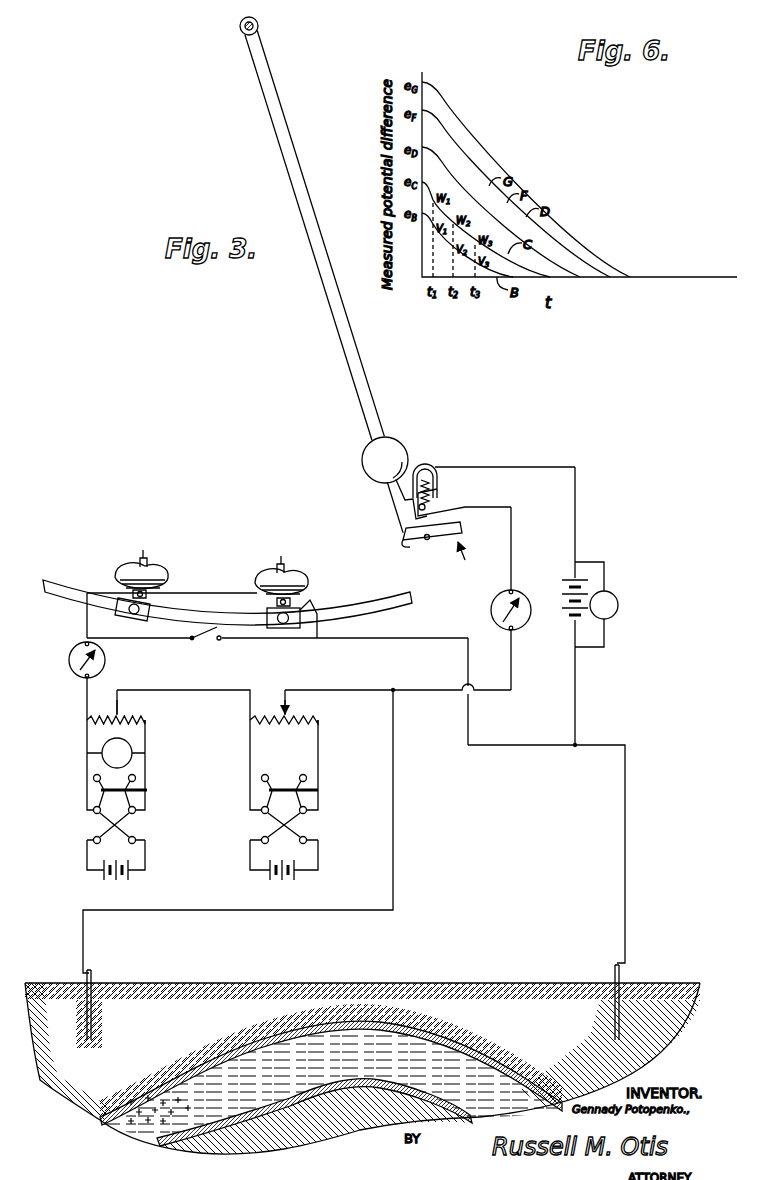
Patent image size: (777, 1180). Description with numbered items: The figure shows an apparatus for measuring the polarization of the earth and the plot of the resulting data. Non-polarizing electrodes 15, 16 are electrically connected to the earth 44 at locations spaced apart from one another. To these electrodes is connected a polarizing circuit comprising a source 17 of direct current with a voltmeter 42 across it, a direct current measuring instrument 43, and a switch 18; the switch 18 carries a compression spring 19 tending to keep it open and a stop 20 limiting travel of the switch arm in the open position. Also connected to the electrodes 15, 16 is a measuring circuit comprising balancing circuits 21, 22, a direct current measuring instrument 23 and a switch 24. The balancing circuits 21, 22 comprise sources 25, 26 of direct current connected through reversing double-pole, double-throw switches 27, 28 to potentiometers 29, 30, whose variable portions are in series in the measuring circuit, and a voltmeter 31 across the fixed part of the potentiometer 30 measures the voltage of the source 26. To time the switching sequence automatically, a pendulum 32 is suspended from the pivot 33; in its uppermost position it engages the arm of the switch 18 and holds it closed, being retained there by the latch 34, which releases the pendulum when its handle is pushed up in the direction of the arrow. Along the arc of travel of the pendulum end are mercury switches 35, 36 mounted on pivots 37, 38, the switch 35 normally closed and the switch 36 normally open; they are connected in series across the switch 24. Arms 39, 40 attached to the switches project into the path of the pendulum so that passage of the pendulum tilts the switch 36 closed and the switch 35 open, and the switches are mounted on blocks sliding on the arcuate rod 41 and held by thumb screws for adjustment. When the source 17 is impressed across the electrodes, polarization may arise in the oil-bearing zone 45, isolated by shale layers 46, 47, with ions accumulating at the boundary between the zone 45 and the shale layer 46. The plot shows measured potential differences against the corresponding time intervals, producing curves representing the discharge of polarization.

The non-polarizing electrode 15 is at (92, 976).
The non-polarizing electrode 16 is at (620, 978).
The source of direct current 17 is at (585, 591).
The switch 18 is at (448, 469).
The compression spring 19 is at (436, 493).
The stop 20 is at (424, 466).
The balancing circuit 21 is at (269, 802).
The balancing circuit 22 is at (102, 789).
The direct current measuring instrument 23 is at (105, 661).
The switch 24 is at (208, 636).
The source of direct current 25 is at (290, 880).
The source of direct current 26 is at (116, 880).
The reversing double-pole, double-throw switch 27 is at (312, 800).
The reversing double-pole, double-throw switch 28 is at (140, 806).
The potentiometer 29 is at (314, 720).
The potentiometer 30 is at (148, 722).
The voltmeter 31 is at (132, 752).
The pendulum 32 is at (404, 446).
The pivot 33 is at (258, 27).
The latch 34 is at (410, 548).
The mercury switch 35 is at (167, 575).
The mercury switch 36 is at (307, 582).
The pivot 37 is at (126, 606).
The pivot 38 is at (301, 606).
The arm 39 is at (146, 555).
The arm 40 is at (283, 562).
The arcuate rod 41 is at (386, 608).
The voltmeter 42 is at (618, 605).
The direct current measuring instrument 43 is at (518, 628).
The earth 44 is at (495, 983).
The oil-bearing zone 45 is at (452, 1062).
The shale layer 46 is at (497, 1066).
The shale layer 47 is at (368, 1097).